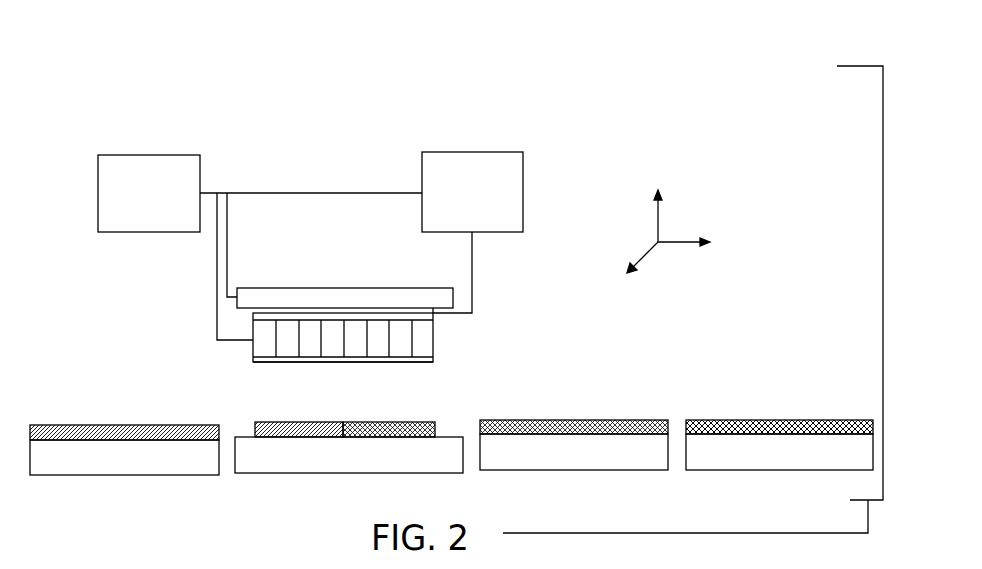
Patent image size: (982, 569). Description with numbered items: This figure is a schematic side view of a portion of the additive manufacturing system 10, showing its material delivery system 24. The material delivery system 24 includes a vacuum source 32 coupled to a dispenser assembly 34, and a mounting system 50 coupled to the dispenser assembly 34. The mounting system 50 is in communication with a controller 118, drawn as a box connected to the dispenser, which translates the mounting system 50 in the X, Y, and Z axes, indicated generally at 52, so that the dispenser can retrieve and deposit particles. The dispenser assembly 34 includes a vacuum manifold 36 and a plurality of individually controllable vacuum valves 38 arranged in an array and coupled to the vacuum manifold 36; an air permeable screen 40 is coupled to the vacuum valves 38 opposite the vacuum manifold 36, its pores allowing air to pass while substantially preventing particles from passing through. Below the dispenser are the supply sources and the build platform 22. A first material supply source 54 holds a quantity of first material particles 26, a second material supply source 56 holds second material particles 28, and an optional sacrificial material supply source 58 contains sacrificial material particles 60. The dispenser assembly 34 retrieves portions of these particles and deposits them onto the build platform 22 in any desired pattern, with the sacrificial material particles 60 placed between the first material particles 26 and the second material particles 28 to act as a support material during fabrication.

The additive manufacturing system 10 is at (180, 97).
The controller 118 is at (136, 204).
The material delivery system 24 is at (378, 150).
The vacuum source 32 is at (470, 152).
The dispenser assembly 34 is at (188, 332).
The vacuum manifold 36 is at (253, 317).
The vacuum valves 38 is at (331, 344).
The air permeable screen 40 is at (252, 362).
The mounting system 50 is at (264, 288).
The X, Y, and Z axes 52 is at (705, 195).
The build platform 22 is at (337, 467).
The first material particles 26 is at (395, 422).
The second material particles 28 is at (90, 425).
The first material supply source 54 is at (563, 464).
The second material supply source 56 is at (112, 468).
The sacrificial material supply source 58 is at (767, 464).
The sacrificial material particles 60 is at (785, 420).